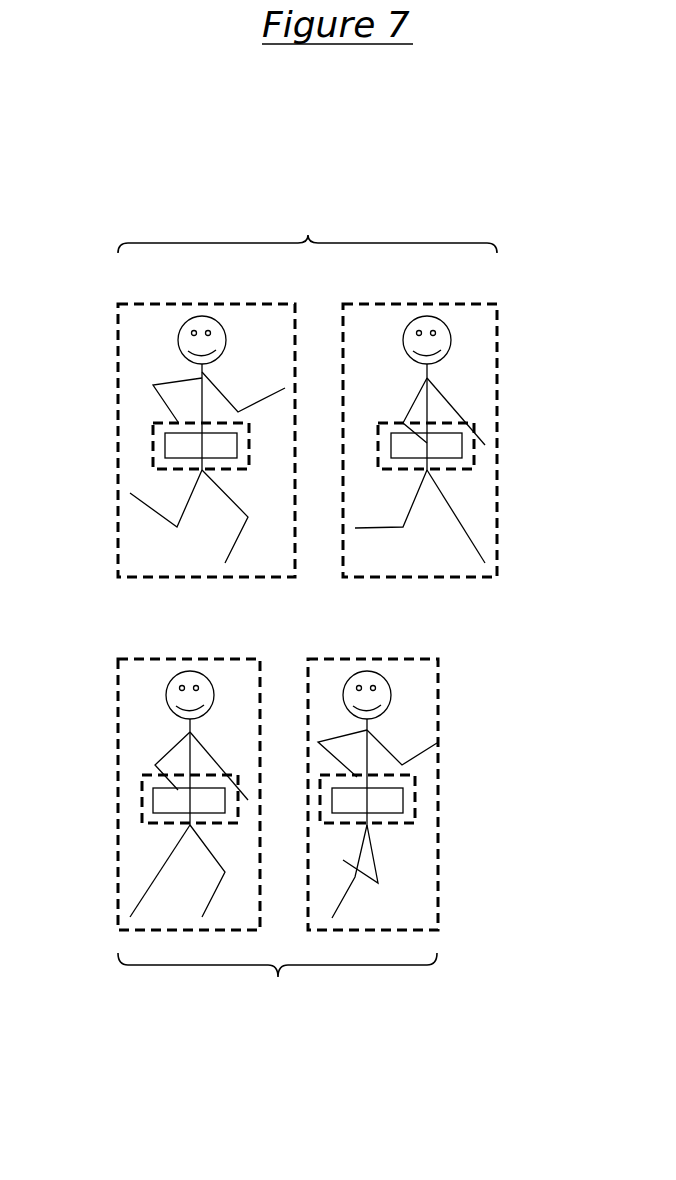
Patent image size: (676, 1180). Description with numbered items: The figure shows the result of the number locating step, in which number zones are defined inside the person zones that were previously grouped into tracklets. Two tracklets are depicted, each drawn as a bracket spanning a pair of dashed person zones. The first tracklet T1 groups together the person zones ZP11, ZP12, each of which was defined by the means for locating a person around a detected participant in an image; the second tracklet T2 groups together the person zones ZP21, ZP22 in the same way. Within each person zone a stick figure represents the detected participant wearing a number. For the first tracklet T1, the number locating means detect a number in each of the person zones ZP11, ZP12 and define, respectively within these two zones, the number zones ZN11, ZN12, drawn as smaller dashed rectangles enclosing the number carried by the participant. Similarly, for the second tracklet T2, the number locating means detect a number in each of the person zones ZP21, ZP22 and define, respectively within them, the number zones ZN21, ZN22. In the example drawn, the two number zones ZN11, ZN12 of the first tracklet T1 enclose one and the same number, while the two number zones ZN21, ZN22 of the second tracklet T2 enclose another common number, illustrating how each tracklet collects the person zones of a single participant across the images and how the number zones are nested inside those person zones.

The first tracklet T1 is at (307, 227).
The second tracklet T2 is at (277, 985).
The participant zone ZP11 is at (225, 304).
The participant zone ZP12 is at (427, 304).
The participant zone ZP21 is at (188, 659).
The participant zone ZP22 is at (363, 659).
The number zone ZN11 is at (150, 443).
The number zone ZN12 is at (473, 460).
The number zone ZN21 is at (143, 800).
The number zone ZN22 is at (415, 795).